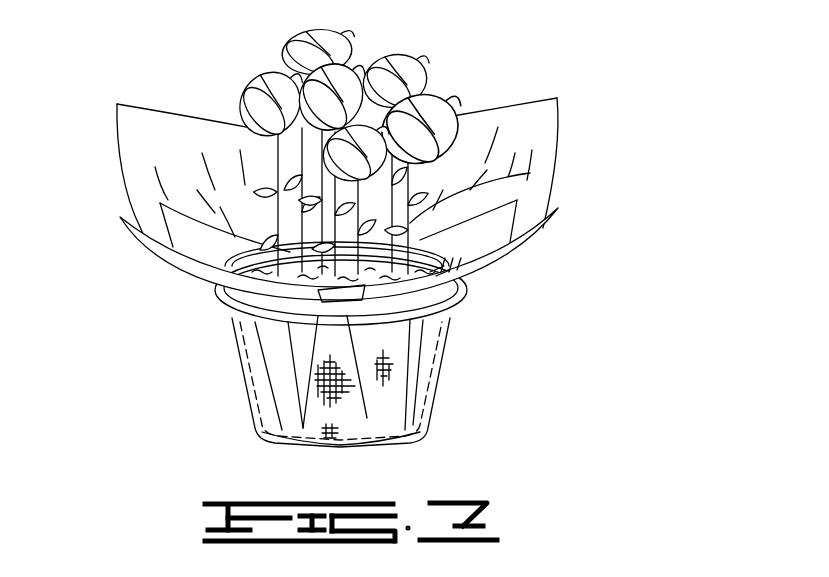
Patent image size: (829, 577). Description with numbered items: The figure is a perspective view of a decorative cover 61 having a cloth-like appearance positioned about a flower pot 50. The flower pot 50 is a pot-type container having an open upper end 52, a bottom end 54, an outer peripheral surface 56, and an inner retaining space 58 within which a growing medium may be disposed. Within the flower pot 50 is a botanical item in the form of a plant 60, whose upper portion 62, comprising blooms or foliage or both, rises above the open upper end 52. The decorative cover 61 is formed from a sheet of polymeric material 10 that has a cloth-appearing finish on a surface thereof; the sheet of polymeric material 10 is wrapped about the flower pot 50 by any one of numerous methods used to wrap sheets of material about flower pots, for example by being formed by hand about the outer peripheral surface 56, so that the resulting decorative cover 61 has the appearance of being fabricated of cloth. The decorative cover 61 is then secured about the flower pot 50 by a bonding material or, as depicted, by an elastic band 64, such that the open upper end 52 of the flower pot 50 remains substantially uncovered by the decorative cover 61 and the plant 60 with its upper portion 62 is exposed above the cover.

The sheet of polymeric material 10 is at (560, 119).
The flower pot 50 is at (438, 346).
The open upper end 52 is at (530, 173).
The bottom end 54 is at (289, 443).
The outer peripheral surface 56 is at (430, 378).
The inner retaining space 58 is at (195, 275).
The plant 60 is at (462, 82).
The decorative cover 61 is at (573, 243).
The upper portion 62 is at (258, 76).
The elastic band 64 is at (220, 300).